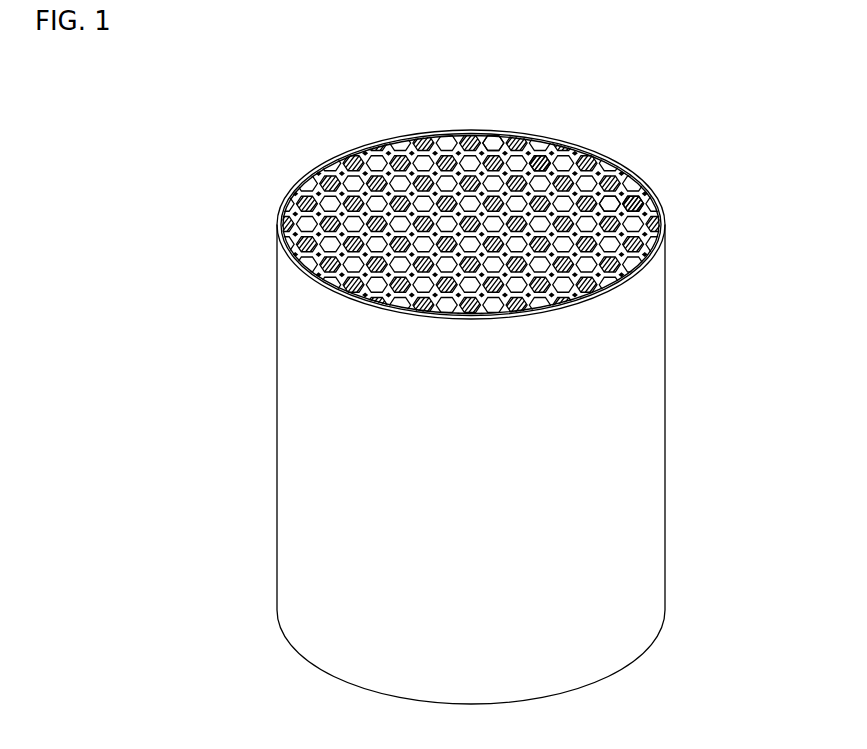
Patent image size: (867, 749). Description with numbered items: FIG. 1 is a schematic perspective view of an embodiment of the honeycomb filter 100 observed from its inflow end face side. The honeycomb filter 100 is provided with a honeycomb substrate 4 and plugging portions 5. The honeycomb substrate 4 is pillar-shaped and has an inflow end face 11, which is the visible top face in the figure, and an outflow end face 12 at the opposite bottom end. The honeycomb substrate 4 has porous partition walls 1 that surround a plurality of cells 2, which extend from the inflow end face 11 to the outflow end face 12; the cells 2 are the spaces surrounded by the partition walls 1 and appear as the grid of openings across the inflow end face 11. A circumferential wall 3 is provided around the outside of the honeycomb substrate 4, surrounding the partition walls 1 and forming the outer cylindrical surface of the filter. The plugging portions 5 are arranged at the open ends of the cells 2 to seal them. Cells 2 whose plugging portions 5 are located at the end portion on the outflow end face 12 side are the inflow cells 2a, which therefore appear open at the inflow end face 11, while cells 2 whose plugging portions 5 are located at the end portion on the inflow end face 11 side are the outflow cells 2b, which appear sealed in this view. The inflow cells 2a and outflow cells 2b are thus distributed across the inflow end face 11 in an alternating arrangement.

The honeycomb filter 100 is at (767, 69).
The partition walls 1 is at (603, 153).
The cells 2 is at (472, 227).
The inflow cells 2a is at (641, 205).
The outflow cells 2b is at (609, 200).
The circumferential wall 3 is at (633, 348).
The honeycomb substrate 4 is at (492, 150).
The plugging portions 5 is at (543, 172).
The inflow end face 11 is at (353, 147).
The outflow end face 12 is at (302, 658).